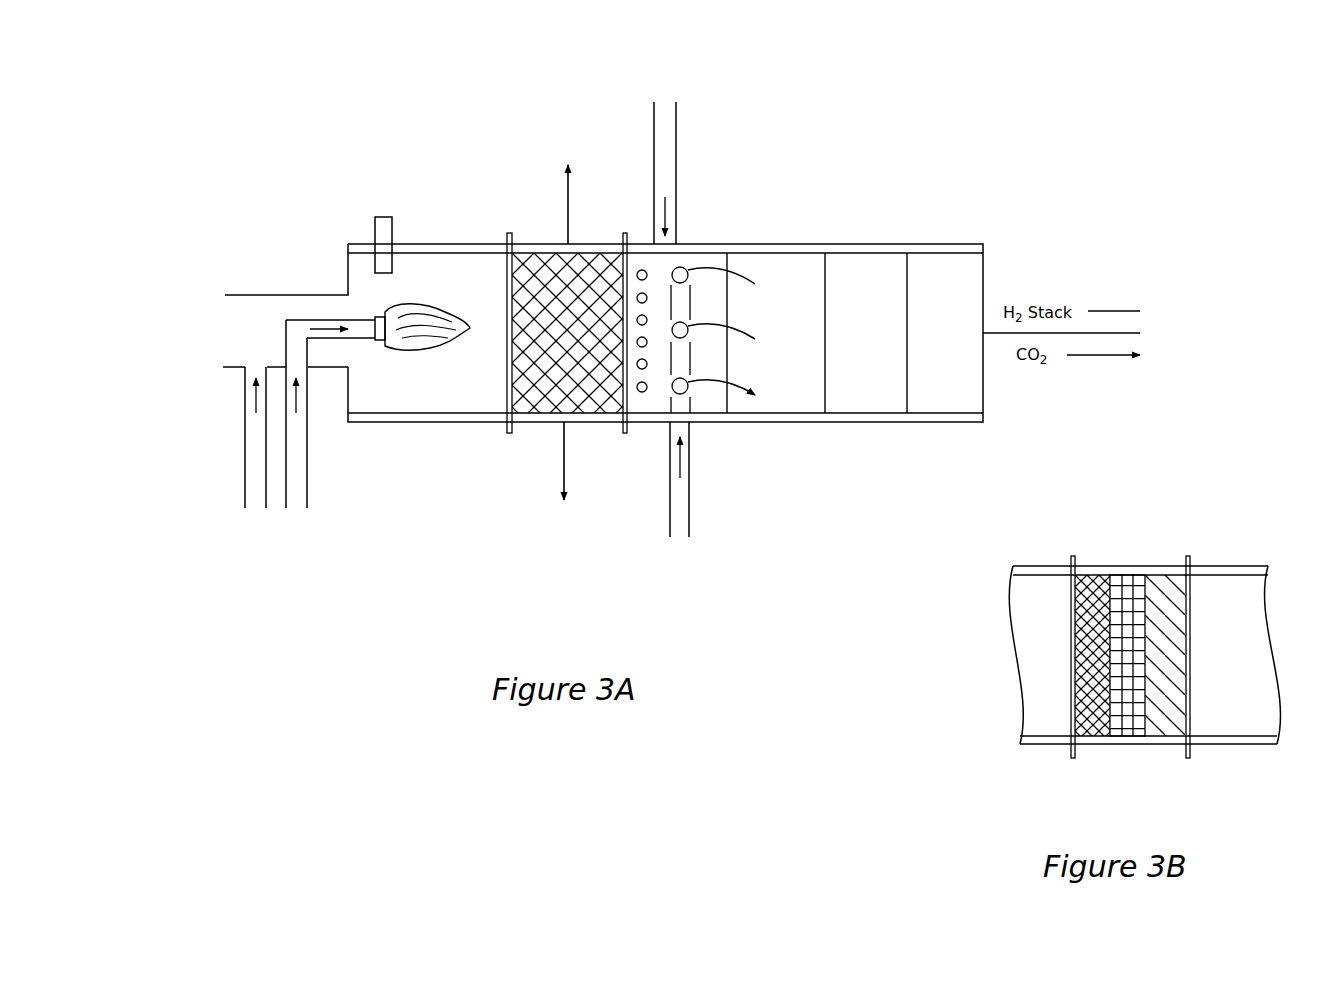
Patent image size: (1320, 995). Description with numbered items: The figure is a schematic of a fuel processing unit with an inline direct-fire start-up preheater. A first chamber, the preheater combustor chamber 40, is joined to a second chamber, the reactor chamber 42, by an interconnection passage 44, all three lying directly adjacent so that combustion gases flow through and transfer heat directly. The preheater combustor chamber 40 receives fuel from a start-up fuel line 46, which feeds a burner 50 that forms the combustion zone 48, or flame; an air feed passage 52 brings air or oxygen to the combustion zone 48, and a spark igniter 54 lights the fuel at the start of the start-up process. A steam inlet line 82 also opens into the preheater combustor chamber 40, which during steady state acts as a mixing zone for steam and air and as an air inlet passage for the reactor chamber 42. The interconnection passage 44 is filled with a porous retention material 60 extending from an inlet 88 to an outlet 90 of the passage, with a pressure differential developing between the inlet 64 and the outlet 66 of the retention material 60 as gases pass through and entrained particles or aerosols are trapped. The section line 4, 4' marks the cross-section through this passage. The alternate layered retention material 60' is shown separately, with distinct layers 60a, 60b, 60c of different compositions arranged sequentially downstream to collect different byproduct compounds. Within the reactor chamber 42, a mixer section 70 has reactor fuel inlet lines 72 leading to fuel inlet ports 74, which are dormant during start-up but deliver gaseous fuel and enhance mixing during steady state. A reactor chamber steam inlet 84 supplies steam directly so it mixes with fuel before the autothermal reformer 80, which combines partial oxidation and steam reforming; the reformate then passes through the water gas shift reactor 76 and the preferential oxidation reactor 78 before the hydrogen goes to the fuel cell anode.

In FIG. 3A, the section line 4 is at (568, 188).
In FIG. 3A, the section line 4' is at (563, 478).
In FIG. 3A, the preheater combustor chamber 40 is at (435, 238).
In FIG. 3A, the reactor chamber 42 is at (803, 230).
In FIG. 3A, the interconnection passage 44 is at (594, 220).
In FIG. 3A, the start-up fuel line 46 is at (293, 510).
In FIG. 3A, the combustion zone 48 is at (432, 348).
In FIG. 3A, the burner 50 is at (380, 342).
In FIG. 3A, the air feed passage 52 is at (247, 305).
In FIG. 3A, the spark igniter 54 is at (384, 218).
In FIG. 3A, the retention material 60 is at (567, 297).
In FIG. 3B, the catalyst bed assembly 60' is at (1144, 688).
In FIG. 3B, the first layer of retention material 60a is at (1097, 586).
In FIG. 3B, the second layer of retention material 60b is at (1128, 586).
In FIG. 3B, the third layer of retention material 60c is at (1162, 586).
In FIG. 3A, the inlet of retention material 64 is at (505, 396).
In FIG. 3A, the outlet of retention material 66 is at (627, 400).
In FIG. 3A, the mixer section 70 is at (688, 246).
In FIG. 3A, the reactor fuel inlet line 72 is at (680, 540).
In FIG. 3A, the fuel inlet ports 74 is at (688, 264).
In FIG. 3A, the water gas shift reactor 76 is at (866, 262).
In FIG. 3A, the preferential oxidation reactor 78 is at (956, 262).
In FIG. 3A, the autothermal reformer 80 is at (811, 400).
In FIG. 3A, the steam inlet line 82 is at (254, 510).
In FIG. 3A, the reactor chamber steam inlet 84 is at (663, 103).
In FIG. 3A, the inlet of interconnection passage 88 is at (506, 440).
In FIG. 3A, the outlet of interconnection passage 90 is at (625, 440).